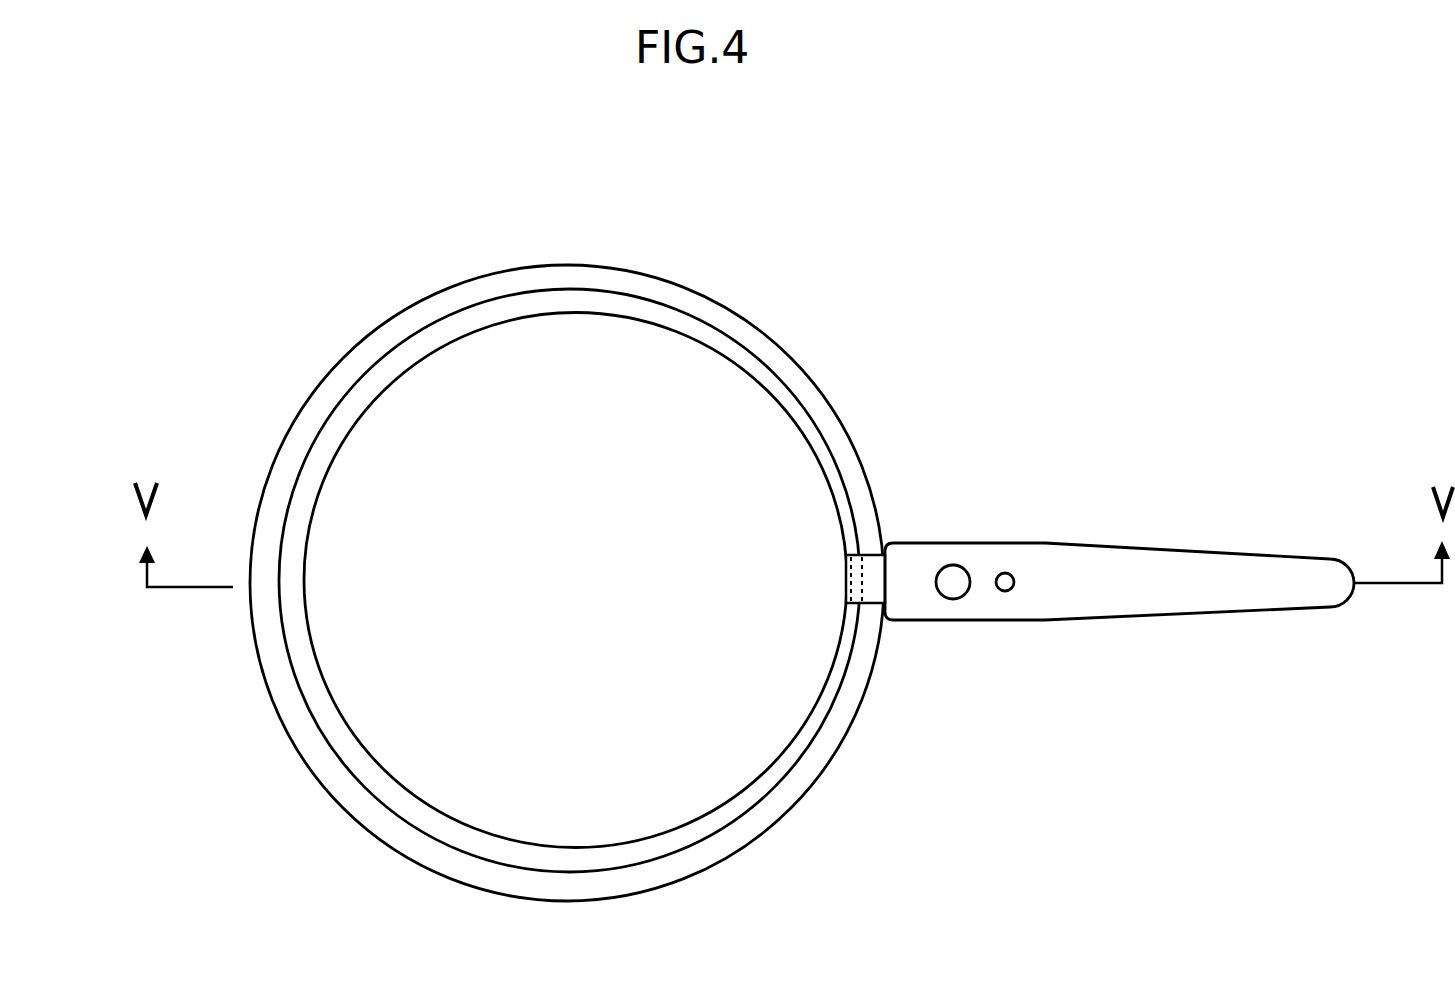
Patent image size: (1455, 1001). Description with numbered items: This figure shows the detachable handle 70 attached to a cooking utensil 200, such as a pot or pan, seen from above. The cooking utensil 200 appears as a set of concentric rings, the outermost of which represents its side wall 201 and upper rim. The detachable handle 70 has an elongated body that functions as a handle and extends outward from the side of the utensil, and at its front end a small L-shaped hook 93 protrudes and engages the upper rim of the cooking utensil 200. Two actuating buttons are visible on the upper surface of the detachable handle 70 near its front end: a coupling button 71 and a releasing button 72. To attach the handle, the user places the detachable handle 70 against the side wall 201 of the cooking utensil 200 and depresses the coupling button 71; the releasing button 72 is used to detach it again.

The cooking utensil 200 is at (547, 685).
The side wall 201 is at (830, 723).
The hook 93 is at (848, 555).
The detachable handle 70 is at (1125, 570).
The coupling button 71 is at (953, 574).
The releasing button 72 is at (1005, 574).